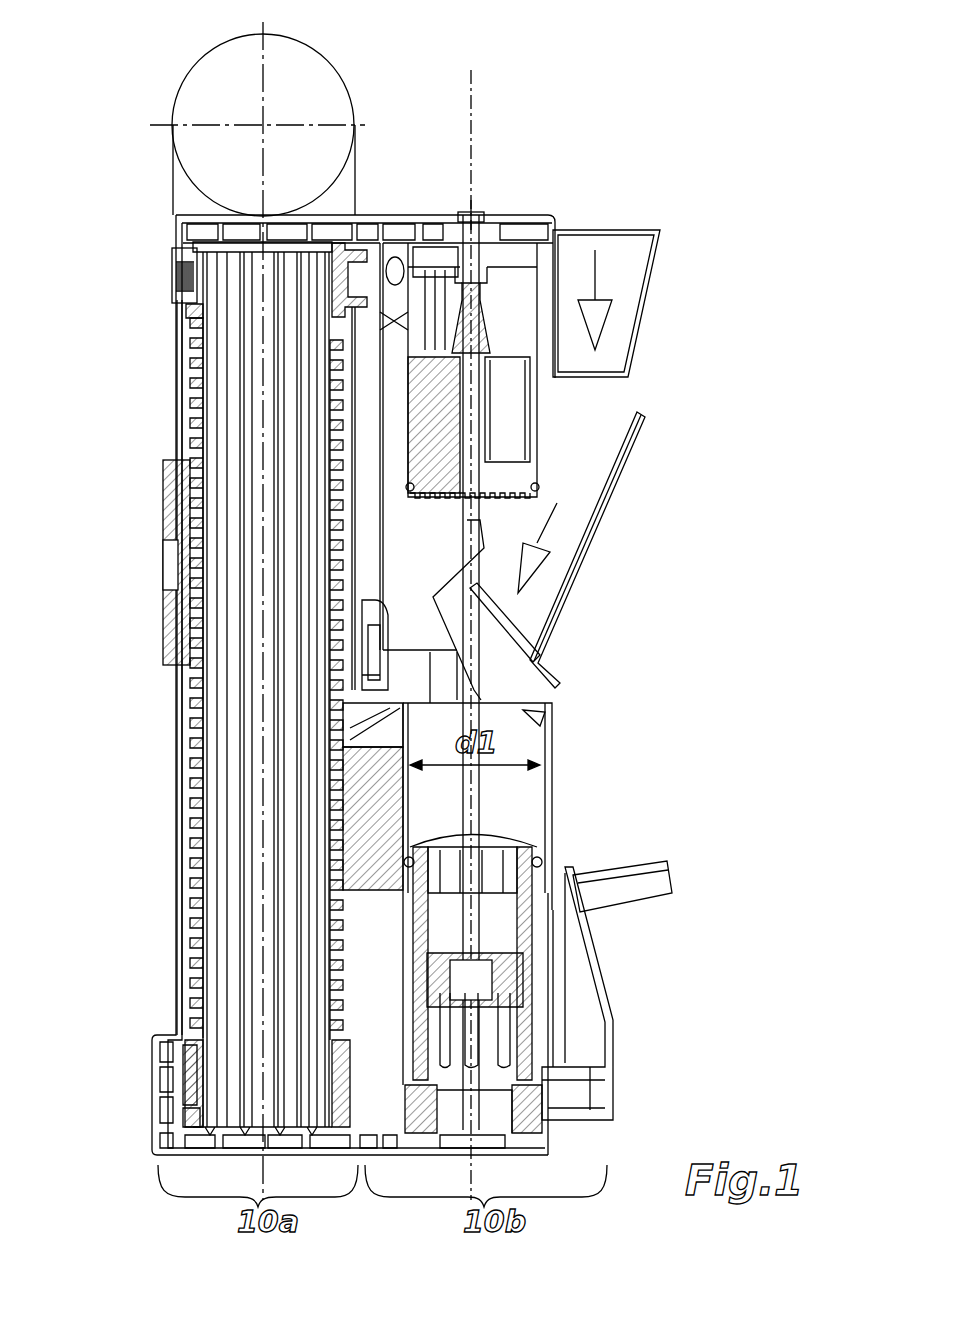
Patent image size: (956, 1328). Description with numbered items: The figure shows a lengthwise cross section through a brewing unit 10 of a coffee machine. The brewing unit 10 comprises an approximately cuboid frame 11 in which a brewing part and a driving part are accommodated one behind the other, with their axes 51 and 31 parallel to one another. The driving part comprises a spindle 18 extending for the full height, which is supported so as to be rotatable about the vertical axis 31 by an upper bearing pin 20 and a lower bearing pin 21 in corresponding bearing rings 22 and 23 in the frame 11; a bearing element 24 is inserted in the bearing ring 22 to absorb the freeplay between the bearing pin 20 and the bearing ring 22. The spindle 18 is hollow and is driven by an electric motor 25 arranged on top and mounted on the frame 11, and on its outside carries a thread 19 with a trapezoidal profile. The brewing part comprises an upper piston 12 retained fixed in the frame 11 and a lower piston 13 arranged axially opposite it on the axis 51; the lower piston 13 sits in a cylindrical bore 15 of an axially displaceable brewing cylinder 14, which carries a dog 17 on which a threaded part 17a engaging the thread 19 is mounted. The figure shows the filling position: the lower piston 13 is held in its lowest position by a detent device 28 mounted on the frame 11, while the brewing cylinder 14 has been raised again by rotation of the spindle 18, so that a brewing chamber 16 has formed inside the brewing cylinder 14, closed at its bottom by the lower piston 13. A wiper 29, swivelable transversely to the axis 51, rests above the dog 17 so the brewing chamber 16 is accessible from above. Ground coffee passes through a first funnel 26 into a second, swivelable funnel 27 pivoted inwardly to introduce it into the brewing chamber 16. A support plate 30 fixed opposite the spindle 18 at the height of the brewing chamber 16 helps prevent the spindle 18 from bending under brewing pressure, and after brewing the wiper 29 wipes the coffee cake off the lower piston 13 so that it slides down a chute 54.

The brewing unit 10 is at (637, 611).
The frame 11 is at (408, 237).
The upper piston 12 is at (513, 407).
The lower piston 13 is at (510, 925).
The brewing cylinder 14 is at (550, 793).
The cylindrical bore 15 is at (530, 705).
The brewing chamber 16 is at (518, 805).
The dog 17 is at (365, 828).
The threaded part 17a is at (330, 858).
The spindle 18 is at (240, 725).
The thread 19 is at (182, 493).
The upper bearing pin 20 is at (190, 322).
The lower bearing pin 21 is at (215, 1070).
The bearing ring 22 is at (350, 278).
The bearing ring 23 is at (190, 1105).
The bearing element 24 is at (185, 287).
The electric motor 25 is at (315, 78).
The first funnel 26 is at (645, 300).
The swivelable funnel 27 is at (625, 462).
The detent device 28 is at (541, 1005).
The wiper 29 is at (375, 648).
The support plate 30 is at (172, 652).
The axis 31 is at (265, 407).
The axis 51 is at (475, 130).
The chute 54 is at (590, 937).